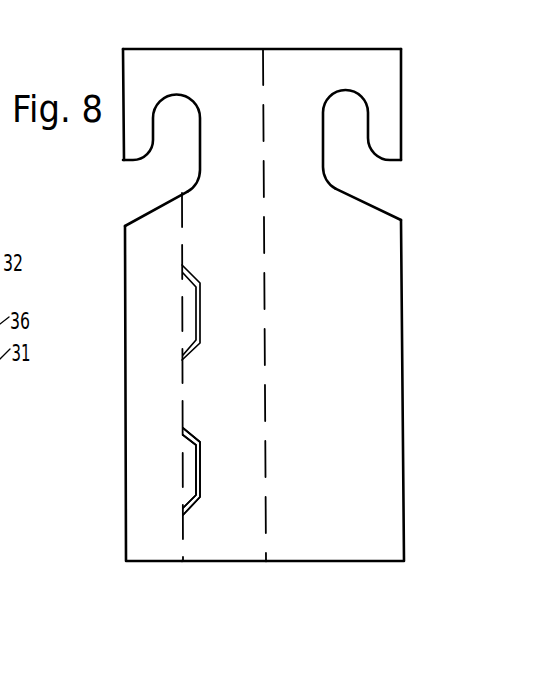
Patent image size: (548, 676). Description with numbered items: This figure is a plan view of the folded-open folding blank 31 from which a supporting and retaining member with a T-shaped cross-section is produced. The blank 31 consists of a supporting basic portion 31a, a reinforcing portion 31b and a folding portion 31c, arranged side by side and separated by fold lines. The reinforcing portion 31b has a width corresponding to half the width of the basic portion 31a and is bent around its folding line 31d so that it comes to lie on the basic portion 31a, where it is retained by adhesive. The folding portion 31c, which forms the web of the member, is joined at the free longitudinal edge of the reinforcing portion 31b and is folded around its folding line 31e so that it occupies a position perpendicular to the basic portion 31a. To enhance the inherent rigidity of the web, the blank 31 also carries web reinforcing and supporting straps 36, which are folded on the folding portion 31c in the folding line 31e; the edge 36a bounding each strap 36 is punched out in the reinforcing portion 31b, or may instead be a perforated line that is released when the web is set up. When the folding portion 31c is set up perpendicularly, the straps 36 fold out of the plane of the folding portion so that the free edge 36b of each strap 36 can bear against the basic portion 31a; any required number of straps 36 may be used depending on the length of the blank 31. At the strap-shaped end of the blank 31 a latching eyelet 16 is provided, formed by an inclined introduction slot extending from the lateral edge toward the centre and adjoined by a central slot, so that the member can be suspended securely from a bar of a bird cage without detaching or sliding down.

The latching eyelet 16 is at (190, 112).
The folding blank 31 is at (414, 338).
The supporting basic portion 31a is at (386, 538).
The reinforcing portion 31b is at (237, 532).
The folding portion 31c is at (140, 551).
The folding line 31d is at (270, 542).
The folding line 31e is at (182, 527).
The web reinforcing and supporting straps 36 is at (185, 445).
The bounding edge 36a is at (202, 448).
The free edge 36b is at (196, 488).